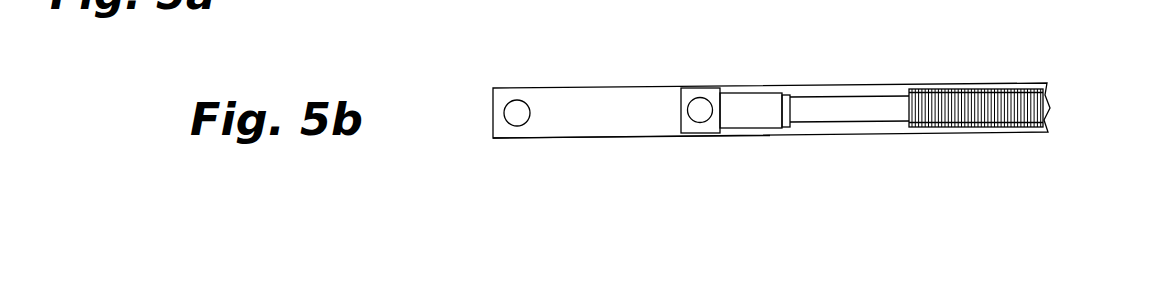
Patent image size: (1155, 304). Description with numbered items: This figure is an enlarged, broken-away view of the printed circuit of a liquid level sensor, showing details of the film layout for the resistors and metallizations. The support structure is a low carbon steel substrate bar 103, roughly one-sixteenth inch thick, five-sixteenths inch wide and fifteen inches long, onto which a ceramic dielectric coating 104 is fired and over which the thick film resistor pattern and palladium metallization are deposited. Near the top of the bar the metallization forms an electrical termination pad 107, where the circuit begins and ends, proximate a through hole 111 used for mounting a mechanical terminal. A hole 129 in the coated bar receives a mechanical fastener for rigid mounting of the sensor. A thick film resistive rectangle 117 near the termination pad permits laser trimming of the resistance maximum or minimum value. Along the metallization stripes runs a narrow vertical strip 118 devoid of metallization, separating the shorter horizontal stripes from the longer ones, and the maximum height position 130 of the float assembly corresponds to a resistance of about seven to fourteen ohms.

The ceramic dielectric coating 104 is at (590, 97).
The electrical termination pad 107 is at (518, 144).
The mounting hole 129 is at (523, 122).
The substrate bar 103 is at (665, 83).
The through hole 111 is at (690, 106).
The thick film resistive rectangle 117 is at (762, 100).
The maximum height position 130 is at (910, 82).
The narrow vertical strip 118 is at (1017, 127).